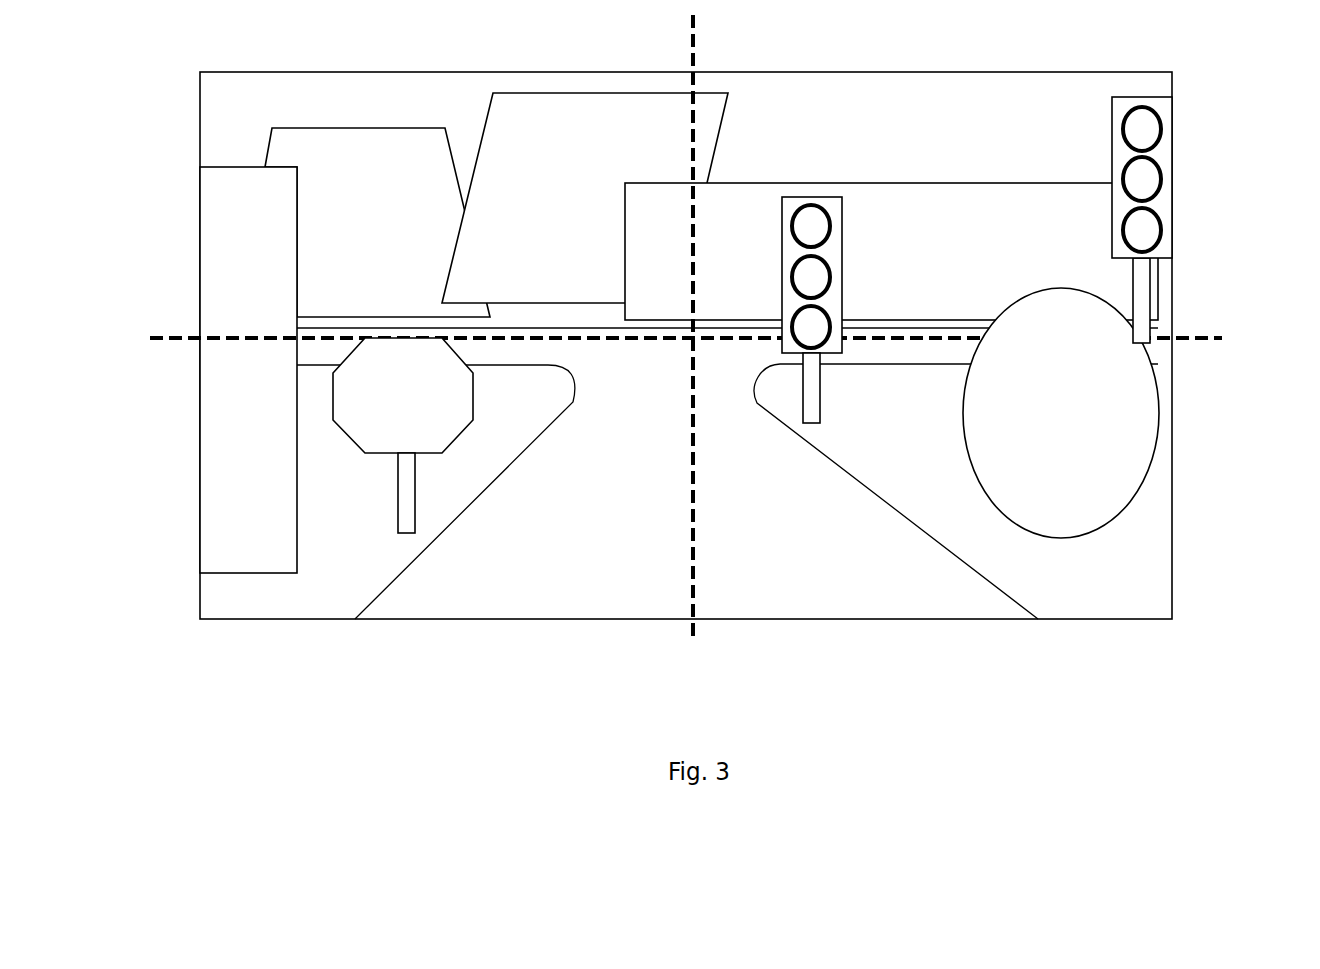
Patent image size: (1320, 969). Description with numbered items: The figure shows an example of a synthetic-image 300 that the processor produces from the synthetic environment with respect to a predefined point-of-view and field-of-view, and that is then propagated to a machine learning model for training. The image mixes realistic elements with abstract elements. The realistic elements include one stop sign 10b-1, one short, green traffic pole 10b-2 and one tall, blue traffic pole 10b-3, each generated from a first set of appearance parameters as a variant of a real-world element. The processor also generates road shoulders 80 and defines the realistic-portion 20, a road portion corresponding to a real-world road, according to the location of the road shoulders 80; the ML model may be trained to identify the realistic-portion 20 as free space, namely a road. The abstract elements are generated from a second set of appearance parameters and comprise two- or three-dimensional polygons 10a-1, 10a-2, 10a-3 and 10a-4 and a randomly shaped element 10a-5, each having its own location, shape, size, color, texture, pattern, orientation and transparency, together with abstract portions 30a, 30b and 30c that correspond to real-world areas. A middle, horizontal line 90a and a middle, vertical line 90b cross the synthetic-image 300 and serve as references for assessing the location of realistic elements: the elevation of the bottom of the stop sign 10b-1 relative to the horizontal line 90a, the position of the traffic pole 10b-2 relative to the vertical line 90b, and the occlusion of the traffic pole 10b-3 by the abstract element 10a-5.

The synthetic-image 300 is at (193, 102).
The polygon abstract element 10a-1 is at (377, 222).
The polygon abstract element 10a-2 is at (585, 198).
The polygon abstract element 10a-3 is at (891, 251).
The polygon abstract element 10a-4 is at (248, 370).
The randomly shaped abstract element 10a-5 is at (1061, 413).
The stop sign element 10b-1 is at (403, 435).
The short, green traffic pole 10b-2 is at (803, 382).
The tall, blue traffic pole 10b-3 is at (1172, 200).
The realistic-portion 20 is at (630, 482).
The abstract portion 30a is at (1145, 572).
The abstract portion 30b is at (375, 545).
The abstract portion 30c is at (577, 313).
The road shoulders 80 is at (450, 530).
The middle, horizontal line 90a is at (1200, 340).
The middle, vertical line 90b is at (695, 38).